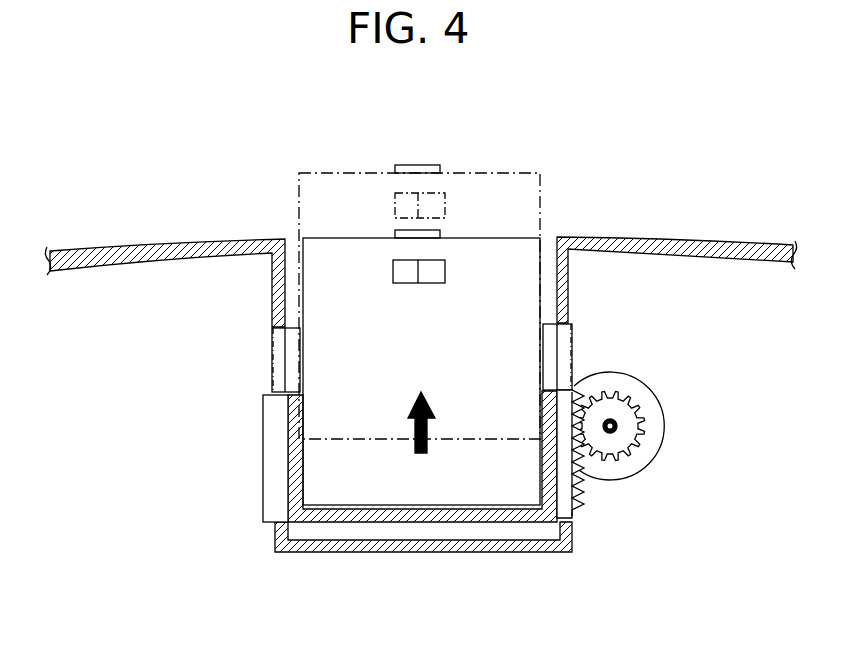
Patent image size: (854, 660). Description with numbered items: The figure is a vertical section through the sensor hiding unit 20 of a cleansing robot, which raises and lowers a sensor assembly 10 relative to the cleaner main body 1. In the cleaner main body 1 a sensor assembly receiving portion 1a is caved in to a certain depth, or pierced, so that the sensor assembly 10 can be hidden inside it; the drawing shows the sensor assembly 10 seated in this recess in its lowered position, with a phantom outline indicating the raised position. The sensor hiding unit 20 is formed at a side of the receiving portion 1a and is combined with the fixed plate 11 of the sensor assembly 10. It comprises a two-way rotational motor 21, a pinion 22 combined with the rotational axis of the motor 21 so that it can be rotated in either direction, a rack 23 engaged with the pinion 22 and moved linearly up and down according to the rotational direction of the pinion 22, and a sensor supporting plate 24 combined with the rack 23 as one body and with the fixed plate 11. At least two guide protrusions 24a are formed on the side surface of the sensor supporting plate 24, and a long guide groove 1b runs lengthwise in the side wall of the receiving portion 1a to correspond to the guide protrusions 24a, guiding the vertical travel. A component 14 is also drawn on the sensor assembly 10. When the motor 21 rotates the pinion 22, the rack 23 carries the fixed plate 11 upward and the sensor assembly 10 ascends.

The cleaner main body 1 is at (190, 249).
The sensor assembly receiving portion 1a is at (556, 254).
The guide groove 1b is at (280, 355).
The sensor assembly 10 is at (329, 240).
The fixed plate 11 is at (358, 490).
The connector 14 is at (440, 260).
The sensor hiding unit 20 is at (664, 450).
The two-way rotational motor 21 is at (655, 413).
The pinion 22 is at (633, 432).
The rack 23 is at (565, 487).
The sensor supporting plate 24 is at (583, 500).
The guide protrusion 24a is at (272, 445).